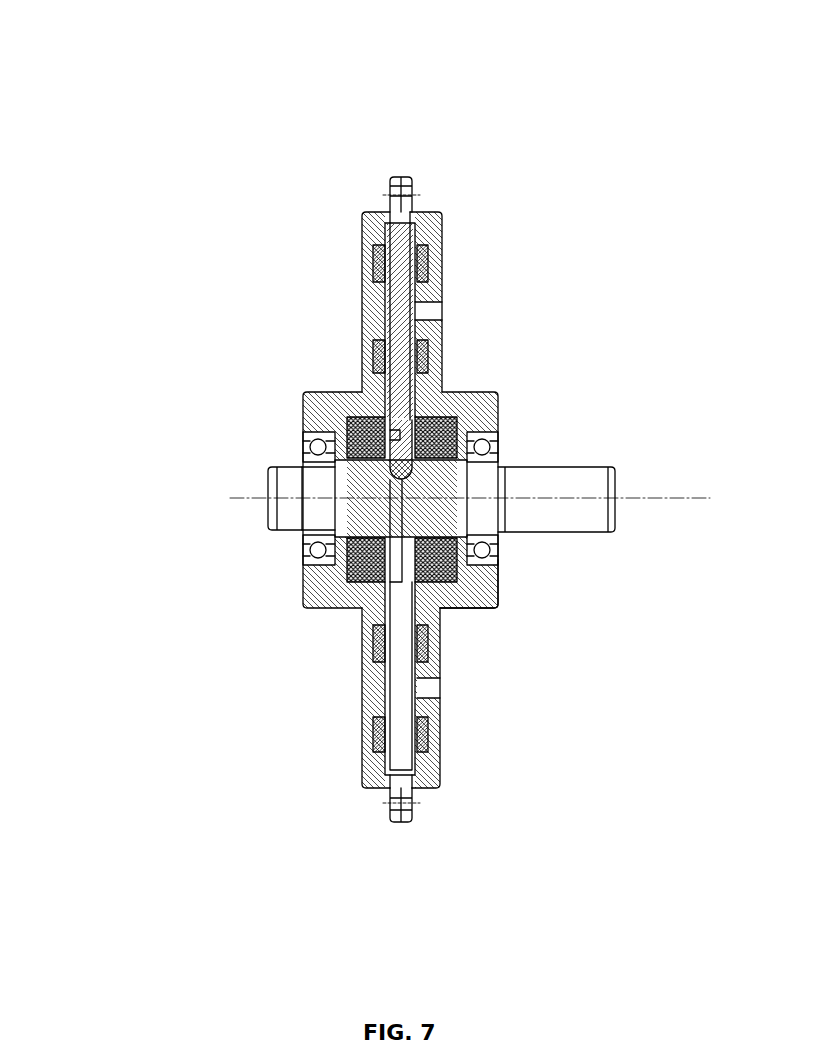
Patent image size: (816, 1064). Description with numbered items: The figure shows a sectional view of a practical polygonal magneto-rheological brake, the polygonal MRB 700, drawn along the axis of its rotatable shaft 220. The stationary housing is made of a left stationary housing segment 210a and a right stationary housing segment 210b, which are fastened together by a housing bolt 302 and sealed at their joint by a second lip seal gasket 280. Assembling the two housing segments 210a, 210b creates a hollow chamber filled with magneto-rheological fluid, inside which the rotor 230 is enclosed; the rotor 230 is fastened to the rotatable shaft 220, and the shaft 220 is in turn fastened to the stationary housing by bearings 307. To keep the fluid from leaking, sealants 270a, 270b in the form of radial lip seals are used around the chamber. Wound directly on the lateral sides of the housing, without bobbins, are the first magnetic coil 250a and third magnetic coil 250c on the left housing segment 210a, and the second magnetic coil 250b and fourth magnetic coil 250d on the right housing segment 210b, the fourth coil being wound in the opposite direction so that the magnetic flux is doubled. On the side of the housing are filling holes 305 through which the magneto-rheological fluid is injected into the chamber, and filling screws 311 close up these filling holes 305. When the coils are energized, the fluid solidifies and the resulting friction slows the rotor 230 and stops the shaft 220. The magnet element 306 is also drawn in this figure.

The polygonal MRB 700 is at (214, 138).
The second lip seal gasket 280 is at (408, 175).
The housing bolt 302 is at (419, 192).
The rotor 230 is at (442, 222).
The first magnetic coil 250a is at (366, 260).
The second magnetic coil 250b is at (430, 258).
The third magnetic coil 250c is at (366, 352).
The fourth magnetic coil 250d is at (430, 345).
The filling hole 305 is at (447, 305).
The magnet 306 is at (457, 415).
The bearing 307 is at (499, 430).
The rotatable shaft 220 is at (510, 503).
The left stationary housing segment 210a is at (417, 791).
The right stationary housing segment 210b is at (501, 584).
The sealant 270a is at (310, 571).
The sealant 270b is at (478, 600).
The filling screw 311 is at (442, 692).